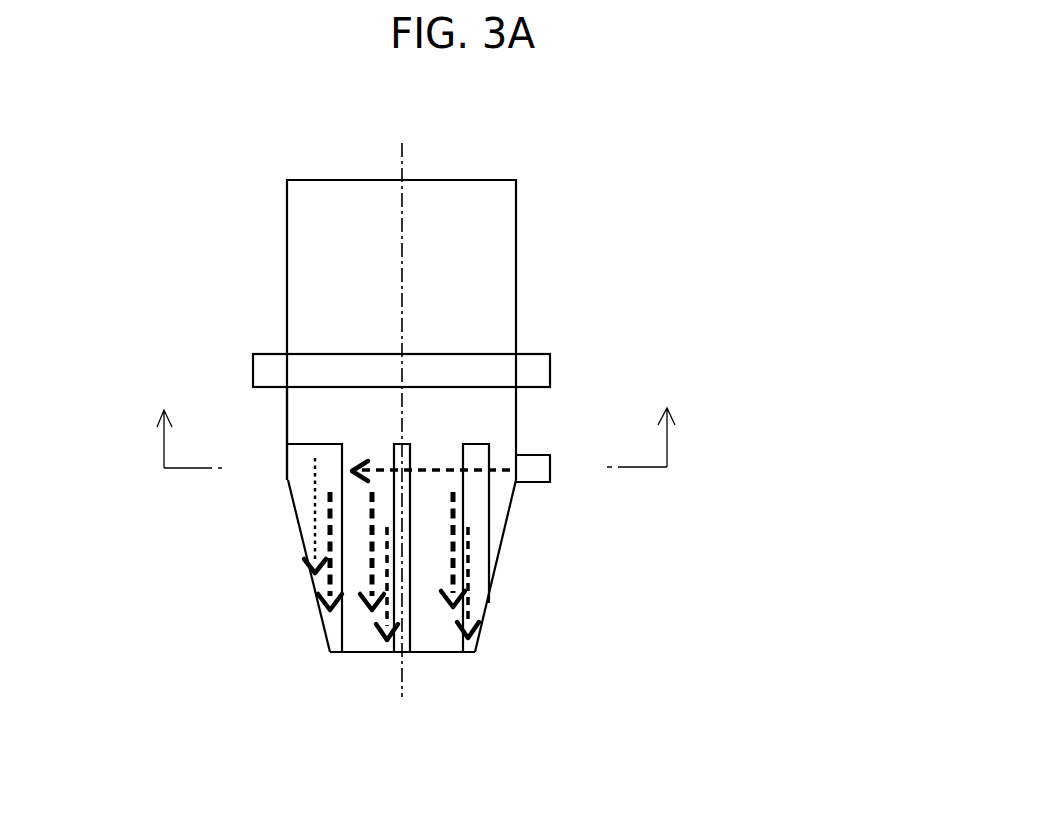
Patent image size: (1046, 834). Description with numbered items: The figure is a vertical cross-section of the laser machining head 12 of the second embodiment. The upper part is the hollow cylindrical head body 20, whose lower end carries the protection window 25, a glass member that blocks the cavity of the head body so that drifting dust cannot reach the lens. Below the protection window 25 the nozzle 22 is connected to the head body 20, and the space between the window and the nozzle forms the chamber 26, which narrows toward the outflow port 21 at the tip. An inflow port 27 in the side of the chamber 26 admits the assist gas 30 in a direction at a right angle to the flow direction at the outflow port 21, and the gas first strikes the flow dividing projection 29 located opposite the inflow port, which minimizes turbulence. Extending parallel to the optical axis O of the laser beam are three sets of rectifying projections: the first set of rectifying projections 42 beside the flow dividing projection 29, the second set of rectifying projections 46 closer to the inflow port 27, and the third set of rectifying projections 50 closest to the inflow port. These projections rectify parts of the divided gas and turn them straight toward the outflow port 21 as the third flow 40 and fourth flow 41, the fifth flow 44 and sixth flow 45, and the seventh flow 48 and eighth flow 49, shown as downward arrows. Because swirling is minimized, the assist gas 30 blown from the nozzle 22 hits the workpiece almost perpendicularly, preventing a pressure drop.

The laser machining head 12 is at (658, 153).
The head body 20 is at (516, 216).
The outflow port 21 is at (455, 653).
The nozzle 22 is at (500, 552).
The protection window 25 is at (530, 364).
The chamber 26 is at (291, 420).
The inflow port 27 is at (530, 483).
The flow dividing projection 29 is at (298, 482).
The assist gas 30 is at (443, 465).
The third flow 40 is at (315, 508).
The fourth flow 41 is at (325, 577).
The first set of rectifying projections 42 is at (330, 457).
The fifth flow 44 is at (370, 558).
The sixth flow 45 is at (385, 607).
The second set of rectifying projections 46 is at (397, 441).
The seventh flow 48 is at (452, 555).
The eighth flow 49 is at (465, 607).
The third set of rectifying projections 50 is at (477, 453).
The optical axis O is at (402, 155).